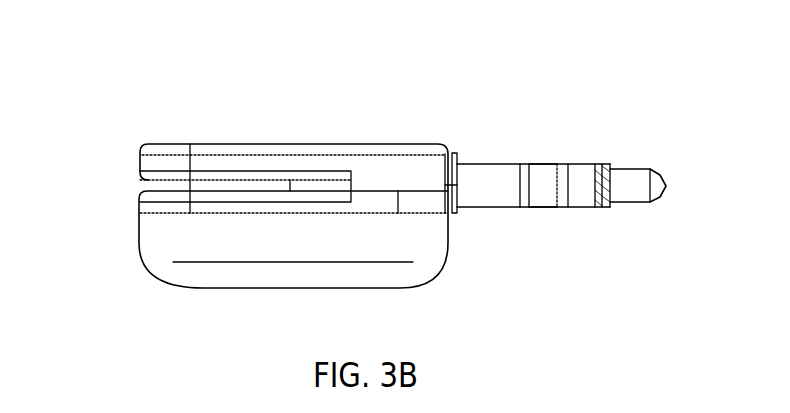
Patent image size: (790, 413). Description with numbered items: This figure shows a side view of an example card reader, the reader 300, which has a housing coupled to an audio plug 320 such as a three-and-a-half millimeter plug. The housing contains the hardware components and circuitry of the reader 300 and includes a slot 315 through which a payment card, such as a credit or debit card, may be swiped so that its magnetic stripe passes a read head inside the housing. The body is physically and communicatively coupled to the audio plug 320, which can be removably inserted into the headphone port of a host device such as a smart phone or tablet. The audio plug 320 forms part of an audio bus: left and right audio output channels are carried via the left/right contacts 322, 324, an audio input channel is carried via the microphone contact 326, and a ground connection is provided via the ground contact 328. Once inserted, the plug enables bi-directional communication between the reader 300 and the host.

The reader 300 is at (185, 80).
The slot 315 is at (140, 183).
The audio plug 320 is at (675, 103).
The left/right contact 322 is at (640, 188).
The left/right contact 324 is at (577, 180).
The microphone contact 326 is at (485, 193).
The ground contact 328 is at (543, 203).